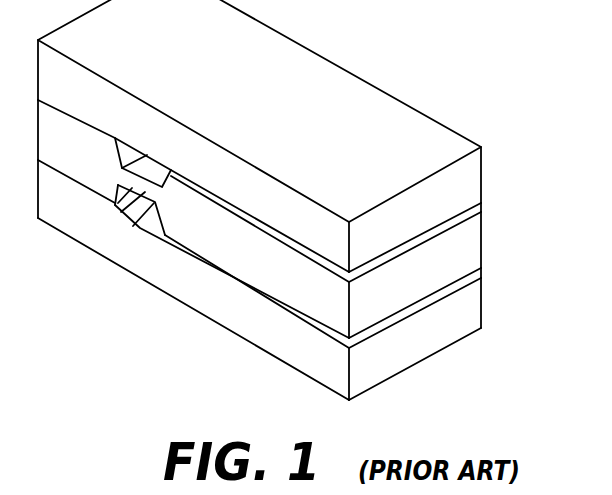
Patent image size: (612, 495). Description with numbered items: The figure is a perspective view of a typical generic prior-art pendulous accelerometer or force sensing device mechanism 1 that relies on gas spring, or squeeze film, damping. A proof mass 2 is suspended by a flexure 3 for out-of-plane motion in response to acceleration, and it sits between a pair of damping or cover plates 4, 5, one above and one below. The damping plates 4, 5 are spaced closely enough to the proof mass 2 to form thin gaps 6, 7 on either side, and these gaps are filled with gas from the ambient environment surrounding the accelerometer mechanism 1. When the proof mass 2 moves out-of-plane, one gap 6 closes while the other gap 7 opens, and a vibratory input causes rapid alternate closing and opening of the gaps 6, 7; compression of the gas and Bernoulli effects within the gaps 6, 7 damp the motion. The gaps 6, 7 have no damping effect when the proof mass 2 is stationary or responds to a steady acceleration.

The accelerometer mechanism 1 is at (309, 200).
The proof mass 2 is at (259, 222).
The flexure 3 is at (154, 198).
The damping plate 4 is at (413, 145).
The damping plate 5 is at (265, 317).
The gap 6 is at (444, 227).
The gap 7 is at (432, 300).